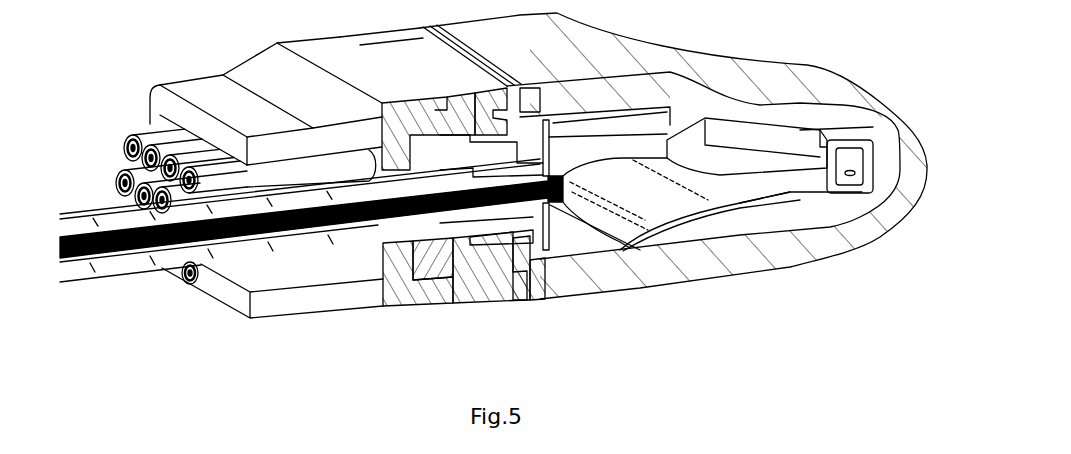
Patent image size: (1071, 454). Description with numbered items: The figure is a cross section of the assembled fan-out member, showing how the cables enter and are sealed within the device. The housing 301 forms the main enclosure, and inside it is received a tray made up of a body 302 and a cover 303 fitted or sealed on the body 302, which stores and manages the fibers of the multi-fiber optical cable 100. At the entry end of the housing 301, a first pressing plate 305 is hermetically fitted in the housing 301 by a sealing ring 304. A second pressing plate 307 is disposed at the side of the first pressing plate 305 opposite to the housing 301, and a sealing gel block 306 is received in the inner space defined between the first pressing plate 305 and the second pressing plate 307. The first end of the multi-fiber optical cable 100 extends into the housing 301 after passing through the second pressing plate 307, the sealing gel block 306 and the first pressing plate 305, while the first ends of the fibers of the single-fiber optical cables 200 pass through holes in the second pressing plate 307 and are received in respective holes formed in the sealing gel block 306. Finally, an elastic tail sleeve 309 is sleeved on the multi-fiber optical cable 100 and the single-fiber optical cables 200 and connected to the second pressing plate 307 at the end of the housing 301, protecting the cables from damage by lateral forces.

The multi-fiber optical cable 100 is at (147, 263).
The single-fiber optical cables 200 is at (142, 133).
The housing 301 is at (585, 54).
The body 302 is at (755, 208).
The cover 303 is at (667, 130).
The sealing ring 304 is at (538, 284).
The first pressing plate 305 is at (418, 32).
The sealing gel block 306 is at (430, 264).
The second pressing plate 307 is at (398, 53).
The elastic tail sleeve 309 is at (270, 63).